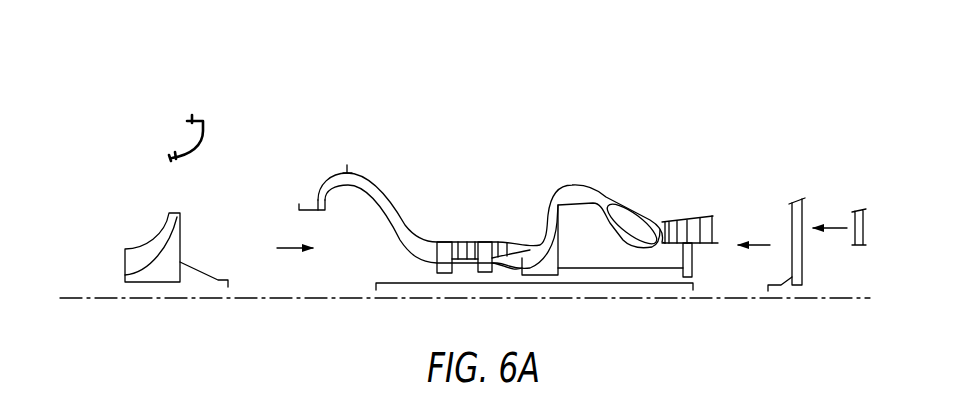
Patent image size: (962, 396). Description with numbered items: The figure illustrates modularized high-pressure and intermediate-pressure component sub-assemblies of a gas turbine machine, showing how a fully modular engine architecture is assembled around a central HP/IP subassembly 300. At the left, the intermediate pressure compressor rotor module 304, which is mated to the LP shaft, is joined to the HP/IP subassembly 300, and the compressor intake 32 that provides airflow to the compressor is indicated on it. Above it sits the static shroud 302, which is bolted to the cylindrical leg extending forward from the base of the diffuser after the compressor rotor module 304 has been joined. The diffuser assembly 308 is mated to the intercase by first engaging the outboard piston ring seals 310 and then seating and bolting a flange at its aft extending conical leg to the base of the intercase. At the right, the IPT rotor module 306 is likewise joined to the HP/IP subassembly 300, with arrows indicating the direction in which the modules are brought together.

The HP/IP subassembly 300 is at (487, 180).
The shroud 302 is at (148, 103).
The intermediate pressure compressor rotor module 304 is at (127, 280).
The compressor intake 32 is at (165, 235).
The IPT rotor module 306 is at (798, 142).
The diffuser assembly 308 is at (312, 185).
The outboard piston ring seals 310 is at (340, 162).